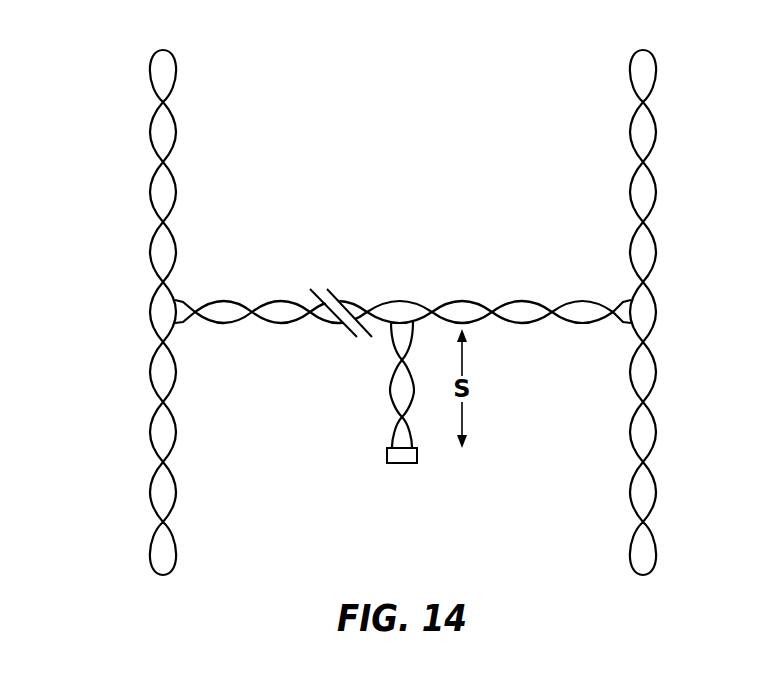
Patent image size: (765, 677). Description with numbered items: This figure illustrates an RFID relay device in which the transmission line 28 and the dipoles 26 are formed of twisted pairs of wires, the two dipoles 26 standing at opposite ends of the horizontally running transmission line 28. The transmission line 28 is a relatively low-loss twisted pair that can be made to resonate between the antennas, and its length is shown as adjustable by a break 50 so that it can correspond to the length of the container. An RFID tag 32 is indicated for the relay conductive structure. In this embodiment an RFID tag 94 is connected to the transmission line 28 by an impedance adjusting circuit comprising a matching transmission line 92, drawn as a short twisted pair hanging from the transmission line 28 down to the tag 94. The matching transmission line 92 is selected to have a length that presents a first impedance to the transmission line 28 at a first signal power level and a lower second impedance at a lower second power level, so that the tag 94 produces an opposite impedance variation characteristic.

The dipoles 26 is at (151, 490).
The transmission line 28 is at (217, 301).
The RFID tag 32 is at (451, 237).
The break 50 is at (328, 298).
The matching transmission line 92 is at (389, 392).
The RFID tag 94 is at (387, 456).